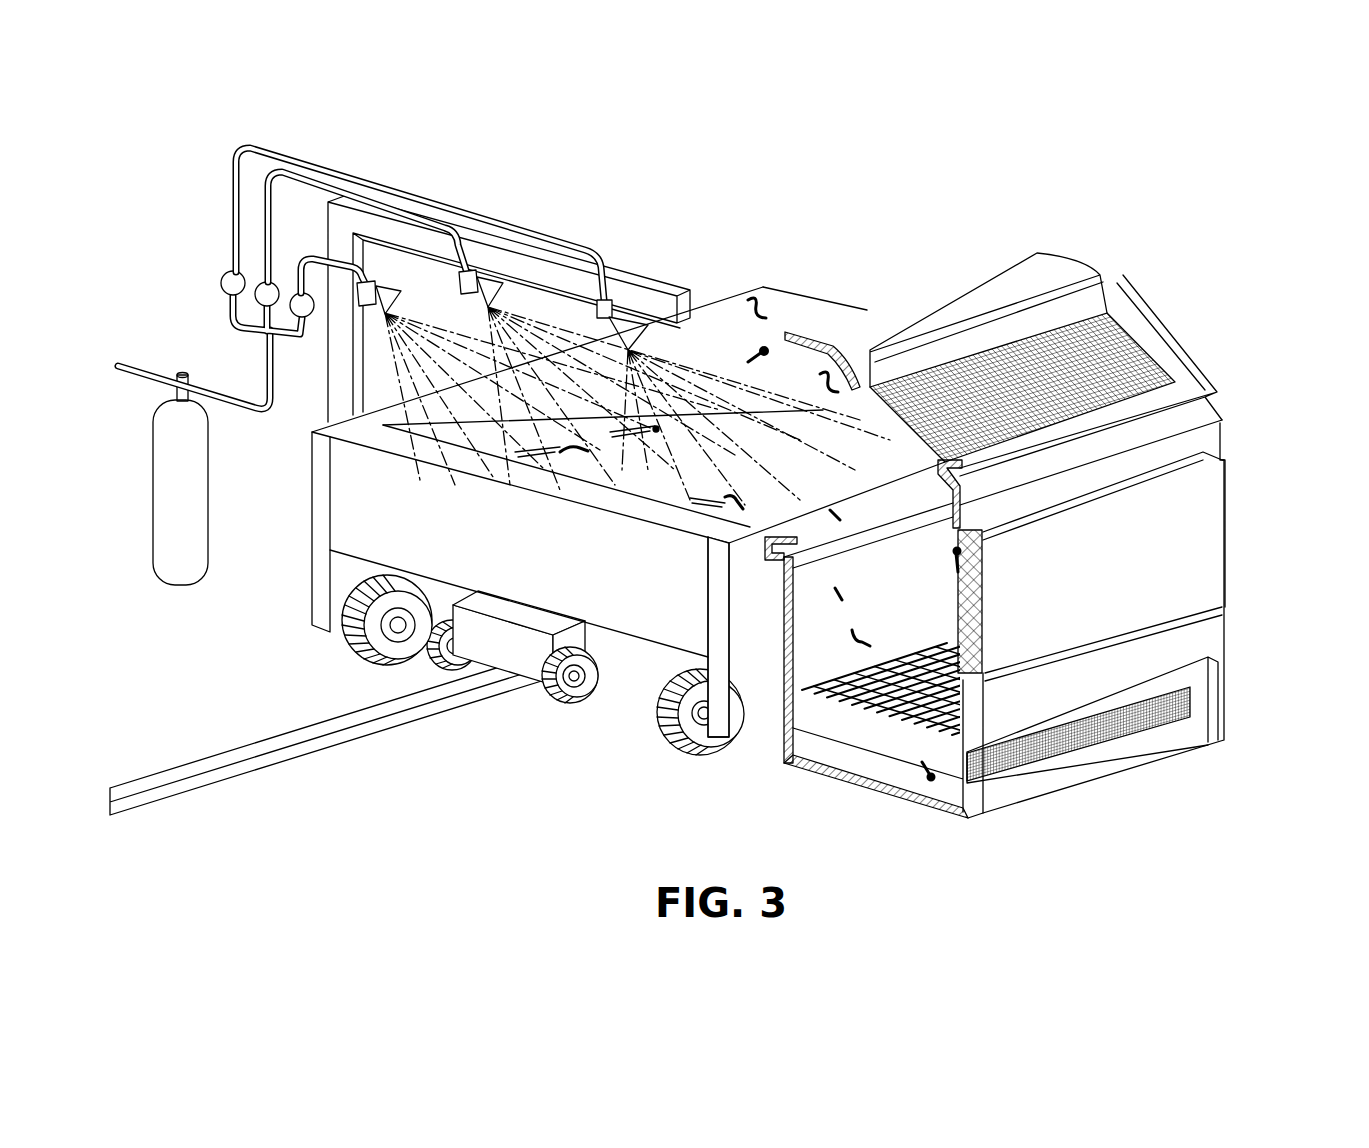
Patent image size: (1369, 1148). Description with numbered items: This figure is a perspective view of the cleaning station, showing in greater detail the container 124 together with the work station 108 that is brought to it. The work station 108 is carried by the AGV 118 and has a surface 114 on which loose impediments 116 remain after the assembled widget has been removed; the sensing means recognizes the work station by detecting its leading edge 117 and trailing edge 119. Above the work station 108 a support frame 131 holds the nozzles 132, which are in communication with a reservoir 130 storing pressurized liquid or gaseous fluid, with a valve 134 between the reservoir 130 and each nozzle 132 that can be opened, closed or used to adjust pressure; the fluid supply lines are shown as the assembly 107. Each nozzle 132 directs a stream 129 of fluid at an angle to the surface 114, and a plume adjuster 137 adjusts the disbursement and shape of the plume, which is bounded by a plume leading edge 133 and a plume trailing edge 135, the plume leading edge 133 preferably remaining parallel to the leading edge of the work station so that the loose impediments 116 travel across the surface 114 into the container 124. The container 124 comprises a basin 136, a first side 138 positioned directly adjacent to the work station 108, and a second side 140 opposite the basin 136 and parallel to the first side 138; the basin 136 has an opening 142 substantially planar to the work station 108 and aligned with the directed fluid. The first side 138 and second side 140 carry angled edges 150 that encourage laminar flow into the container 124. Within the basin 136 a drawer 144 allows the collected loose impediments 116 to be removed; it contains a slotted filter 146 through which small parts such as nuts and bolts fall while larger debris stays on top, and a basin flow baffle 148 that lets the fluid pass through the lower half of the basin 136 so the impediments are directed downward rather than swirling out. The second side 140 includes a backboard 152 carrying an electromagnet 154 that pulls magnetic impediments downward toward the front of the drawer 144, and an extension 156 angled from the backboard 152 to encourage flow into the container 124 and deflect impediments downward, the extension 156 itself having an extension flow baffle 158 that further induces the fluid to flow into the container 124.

The spray supply tubing 107 is at (287, 138).
The work station 108 is at (312, 560).
The surface 114 is at (688, 481).
The loose impediments 116 is at (762, 350).
The leading edge 117 is at (568, 563).
The AGV 118 is at (527, 652).
The trailing edge 119 is at (832, 297).
The container 124 is at (1228, 412).
The stream 129 is at (725, 355).
The reservoir 130 is at (153, 435).
The support frame 131 is at (533, 273).
The nozzle 132 is at (376, 282).
The plume leading edge 133 is at (447, 443).
The valve 134 is at (256, 284).
The plume trailing edge 135 is at (495, 423).
The basin 136 is at (843, 755).
The plume adjuster 137 is at (396, 300).
The first side 138 is at (780, 763).
The second side 140 is at (1247, 428).
The opening 142 is at (886, 528).
The drawer 144 is at (1077, 697).
The slotted filter 146 is at (905, 672).
The basin flow baffle 148 is at (1147, 725).
The edges 150 is at (840, 352).
The backboard 152 is at (1227, 487).
The electromagnet 154 is at (970, 600).
The extension 156 is at (1140, 266).
The extension flow baffle 158 is at (1090, 345).